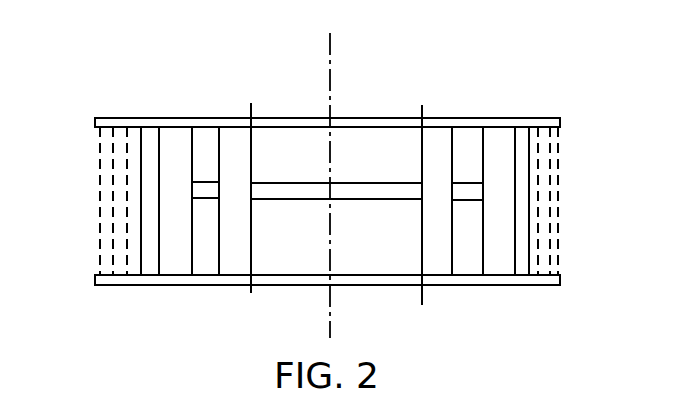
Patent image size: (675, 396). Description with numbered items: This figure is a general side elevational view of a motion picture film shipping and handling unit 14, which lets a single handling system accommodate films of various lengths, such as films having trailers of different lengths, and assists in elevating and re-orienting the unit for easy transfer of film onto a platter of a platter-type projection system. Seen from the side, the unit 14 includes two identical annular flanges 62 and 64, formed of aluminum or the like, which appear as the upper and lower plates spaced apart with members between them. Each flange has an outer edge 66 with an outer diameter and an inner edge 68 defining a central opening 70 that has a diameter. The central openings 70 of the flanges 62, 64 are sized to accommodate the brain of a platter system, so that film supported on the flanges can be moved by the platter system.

The shipping and handling unit 14 is at (178, 88).
The annular flange 62 is at (104, 117).
The annular flange 64 is at (122, 285).
The outer edge 66 is at (562, 126).
The inner edge 68 is at (251, 106).
The central opening 70 is at (290, 118).